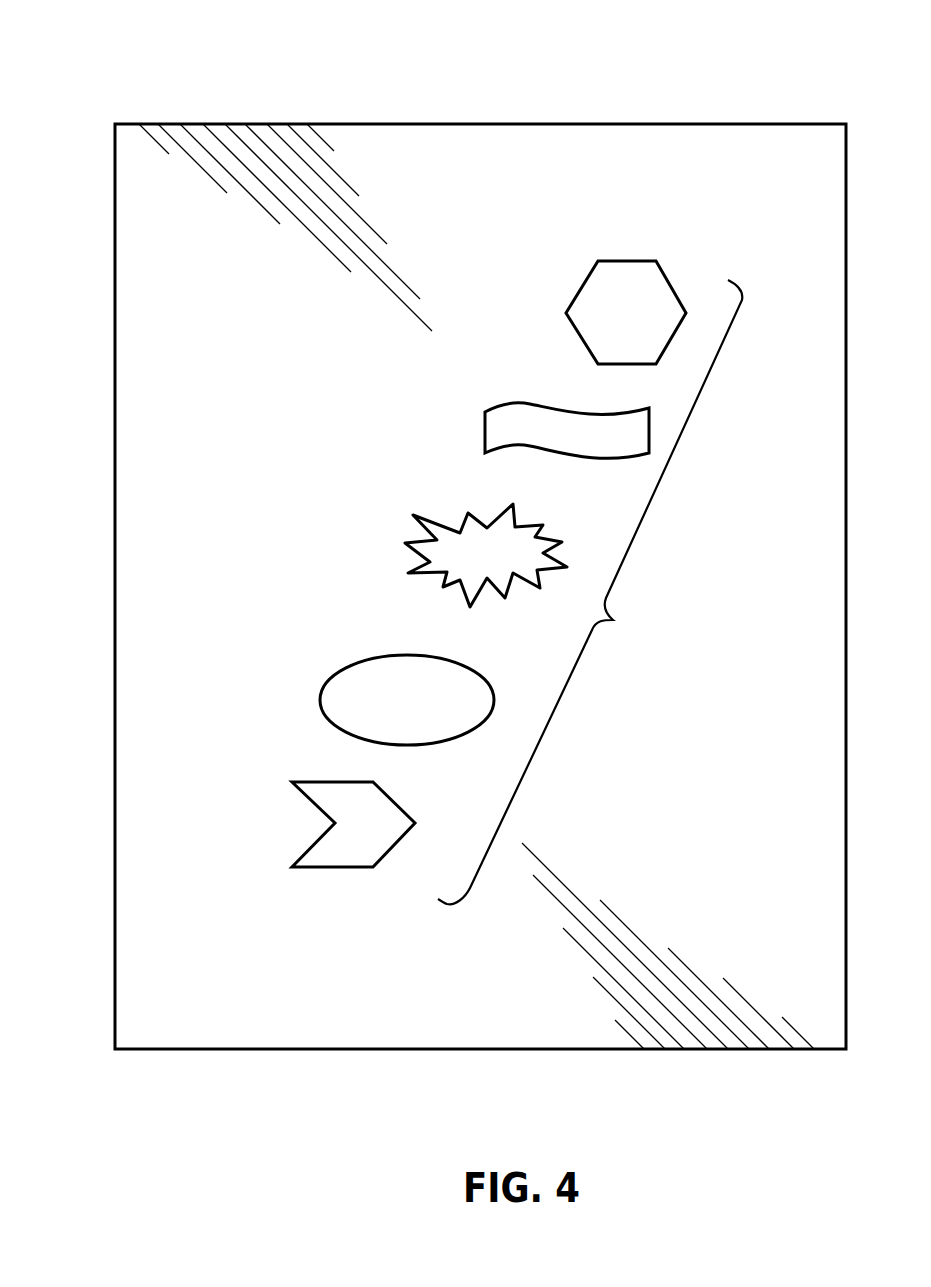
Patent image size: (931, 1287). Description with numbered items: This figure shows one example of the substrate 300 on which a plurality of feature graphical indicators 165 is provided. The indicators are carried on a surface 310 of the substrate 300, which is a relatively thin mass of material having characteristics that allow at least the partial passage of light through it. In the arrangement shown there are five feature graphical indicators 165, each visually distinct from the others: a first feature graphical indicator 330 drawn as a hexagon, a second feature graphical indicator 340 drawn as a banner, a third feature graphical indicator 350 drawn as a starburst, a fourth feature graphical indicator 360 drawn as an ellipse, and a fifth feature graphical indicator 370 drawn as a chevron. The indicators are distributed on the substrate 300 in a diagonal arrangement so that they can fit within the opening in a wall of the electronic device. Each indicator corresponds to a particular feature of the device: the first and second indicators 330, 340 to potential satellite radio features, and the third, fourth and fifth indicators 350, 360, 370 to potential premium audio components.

The substrate 300 is at (449, 533).
The surface 310 is at (479, 145).
The first feature graphical indicator 330 is at (584, 286).
The second feature graphical indicator 340 is at (486, 432).
The third feature graphical indicator 350 is at (405, 543).
The fourth feature graphical indicator 360 is at (322, 683).
The fifth feature graphical indicator 370 is at (310, 847).
The feature graphical indicators 165 is at (590, 592).